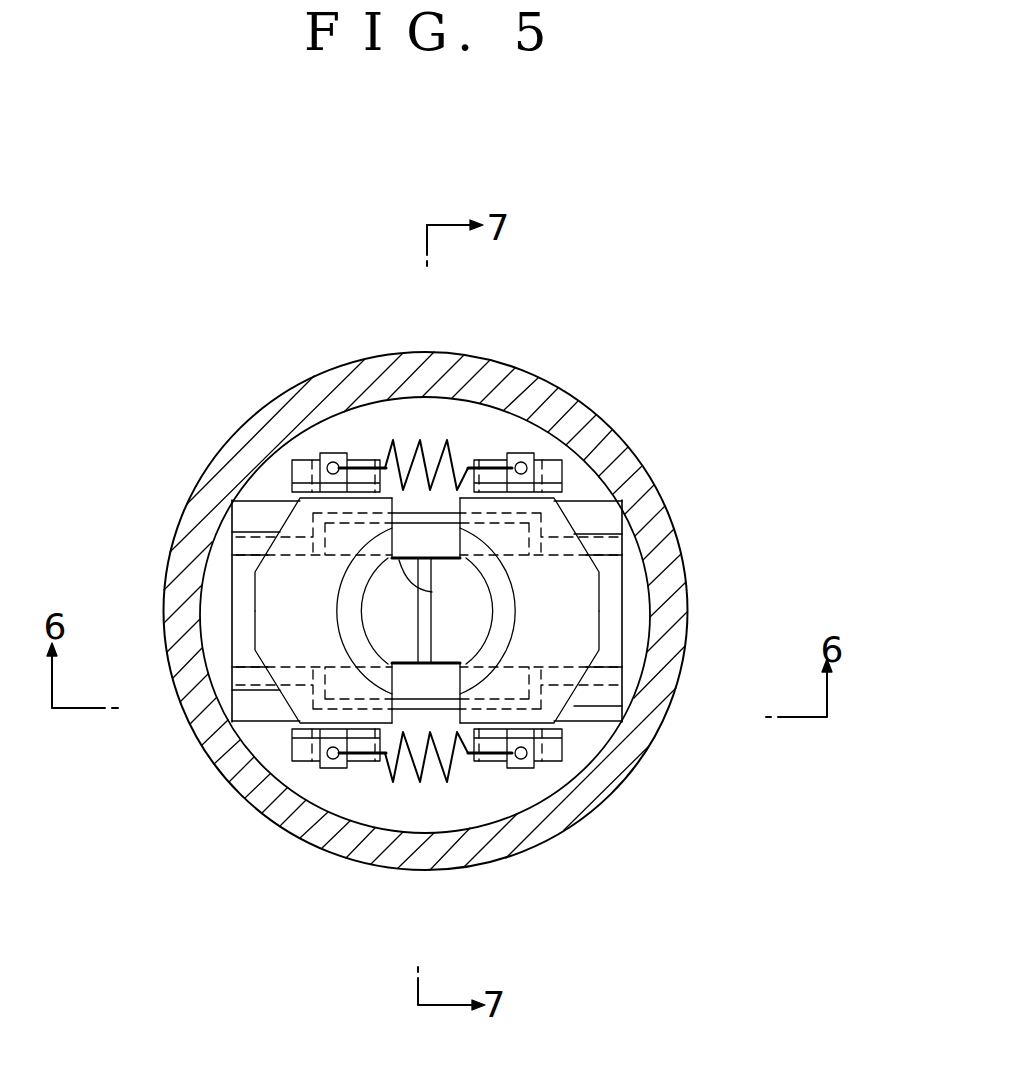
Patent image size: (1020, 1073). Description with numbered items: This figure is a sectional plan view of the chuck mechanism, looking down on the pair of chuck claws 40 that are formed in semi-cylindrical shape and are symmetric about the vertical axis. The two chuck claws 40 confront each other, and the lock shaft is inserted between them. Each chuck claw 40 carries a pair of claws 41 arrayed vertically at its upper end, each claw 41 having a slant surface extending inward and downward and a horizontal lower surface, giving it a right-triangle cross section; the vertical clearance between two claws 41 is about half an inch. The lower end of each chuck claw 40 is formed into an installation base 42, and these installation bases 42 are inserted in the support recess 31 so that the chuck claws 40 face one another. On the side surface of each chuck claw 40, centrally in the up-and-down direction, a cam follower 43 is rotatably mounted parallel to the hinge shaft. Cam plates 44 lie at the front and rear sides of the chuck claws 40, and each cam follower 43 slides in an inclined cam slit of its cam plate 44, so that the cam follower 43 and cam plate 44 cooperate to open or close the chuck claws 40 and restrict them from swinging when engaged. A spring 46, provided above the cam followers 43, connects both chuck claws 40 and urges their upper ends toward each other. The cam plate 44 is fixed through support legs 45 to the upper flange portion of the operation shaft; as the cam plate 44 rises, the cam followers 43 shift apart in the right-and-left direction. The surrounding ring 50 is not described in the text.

The support recess 31 is at (405, 662).
The chuck claw 40 is at (265, 612).
The claw 41 is at (365, 625).
The installation base 42 is at (378, 602).
The cam follower 43 is at (366, 448).
The cam plate 44 is at (468, 452).
The support leg 45 is at (603, 524).
The spring 46 is at (421, 446).
The outer ring 50 is at (635, 458).